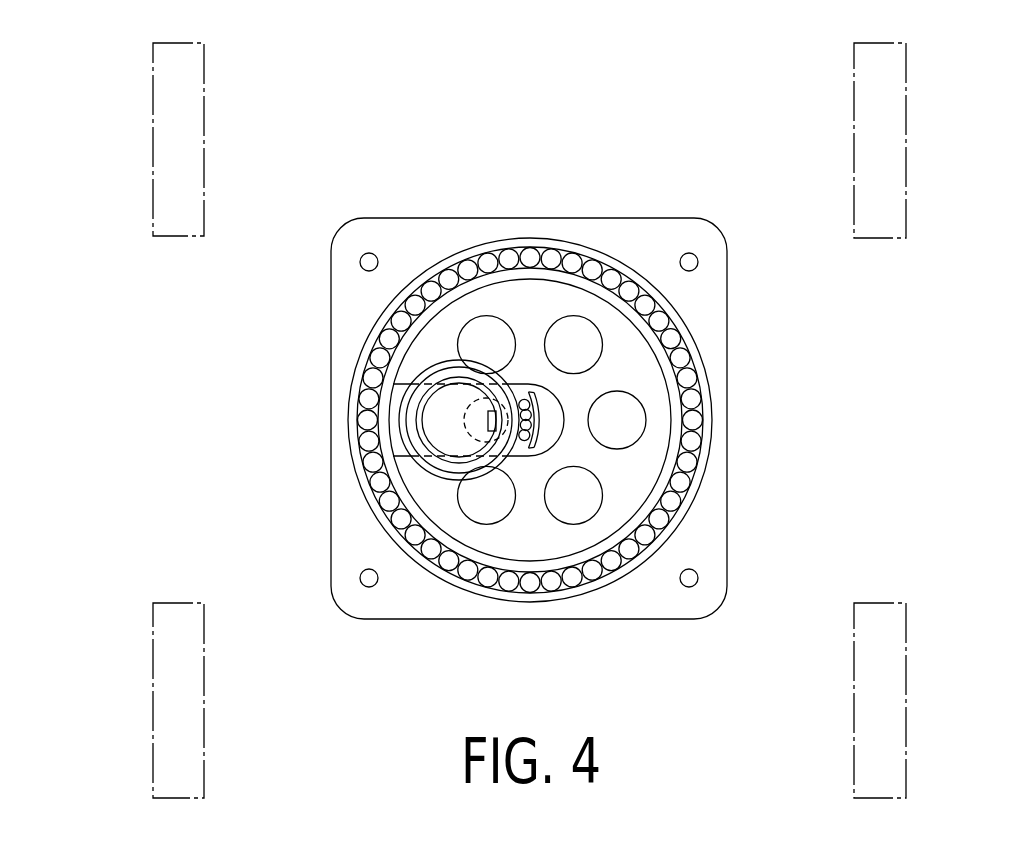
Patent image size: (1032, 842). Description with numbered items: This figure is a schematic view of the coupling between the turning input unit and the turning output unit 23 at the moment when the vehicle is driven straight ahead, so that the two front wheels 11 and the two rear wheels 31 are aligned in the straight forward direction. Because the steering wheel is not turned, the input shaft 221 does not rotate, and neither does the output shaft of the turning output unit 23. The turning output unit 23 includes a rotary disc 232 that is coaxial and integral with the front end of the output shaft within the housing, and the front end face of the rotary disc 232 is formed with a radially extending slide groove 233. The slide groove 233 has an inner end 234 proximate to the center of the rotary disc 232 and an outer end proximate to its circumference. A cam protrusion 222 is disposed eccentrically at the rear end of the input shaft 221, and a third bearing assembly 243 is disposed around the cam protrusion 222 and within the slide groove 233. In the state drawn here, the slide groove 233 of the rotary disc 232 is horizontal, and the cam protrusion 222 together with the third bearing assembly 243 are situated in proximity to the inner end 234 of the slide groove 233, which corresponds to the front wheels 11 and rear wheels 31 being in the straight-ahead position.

The front wheels 11 is at (165, 715).
The rear wheels 31 is at (180, 157).
The turning output unit 23 is at (352, 428).
The slide groove 233 is at (392, 366).
The rotary disc 232 is at (418, 484).
The inner end 234 is at (548, 402).
The input shaft 221 is at (440, 463).
The cam protrusion 222 is at (483, 412).
The third bearing assembly 243 is at (533, 440).